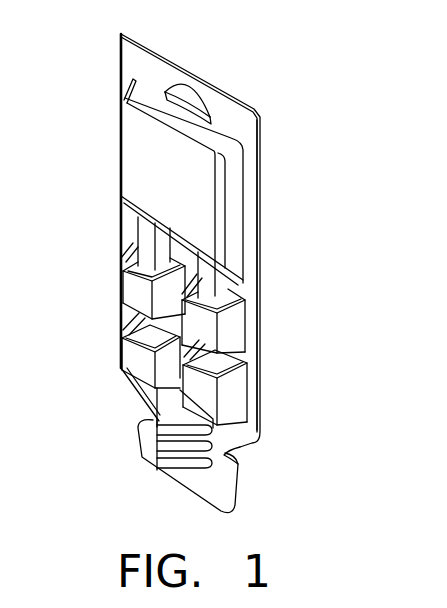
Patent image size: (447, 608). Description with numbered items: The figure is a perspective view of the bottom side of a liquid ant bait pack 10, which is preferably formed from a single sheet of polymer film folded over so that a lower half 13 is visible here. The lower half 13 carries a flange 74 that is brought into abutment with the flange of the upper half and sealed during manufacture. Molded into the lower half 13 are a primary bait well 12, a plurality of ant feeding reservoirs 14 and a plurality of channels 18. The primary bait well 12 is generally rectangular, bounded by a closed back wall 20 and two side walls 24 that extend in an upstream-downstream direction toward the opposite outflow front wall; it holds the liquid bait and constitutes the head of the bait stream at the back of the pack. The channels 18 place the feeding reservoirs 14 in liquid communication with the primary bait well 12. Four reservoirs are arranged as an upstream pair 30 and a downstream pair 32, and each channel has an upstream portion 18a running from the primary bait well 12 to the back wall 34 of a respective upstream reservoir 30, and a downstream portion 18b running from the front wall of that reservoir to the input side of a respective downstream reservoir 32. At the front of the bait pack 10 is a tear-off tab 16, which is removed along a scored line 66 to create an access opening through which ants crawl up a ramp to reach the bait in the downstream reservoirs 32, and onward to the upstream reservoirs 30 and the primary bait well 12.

The ant bait pack 10 is at (283, 97).
The primary bait well 12 is at (207, 214).
The lower half 13 is at (110, 91).
The ant feeding reservoirs 14 is at (278, 354).
The tear-off tab 16 is at (232, 477).
The channels 18 is at (122, 227).
The upstream portion of channel 18a is at (130, 245).
The downstream portion of channel 18b is at (246, 368).
The closed back wall 20 is at (145, 90).
The side walls 24 is at (236, 175).
The upstream pair of ant feeding reservoirs 30 is at (110, 289).
The downstream pair of ant feeding reservoirs 32 is at (110, 352).
The back wall of upstream feeding reservoir 34 is at (244, 321).
The scored line 66 is at (234, 455).
The flange of lower half 74 is at (261, 236).